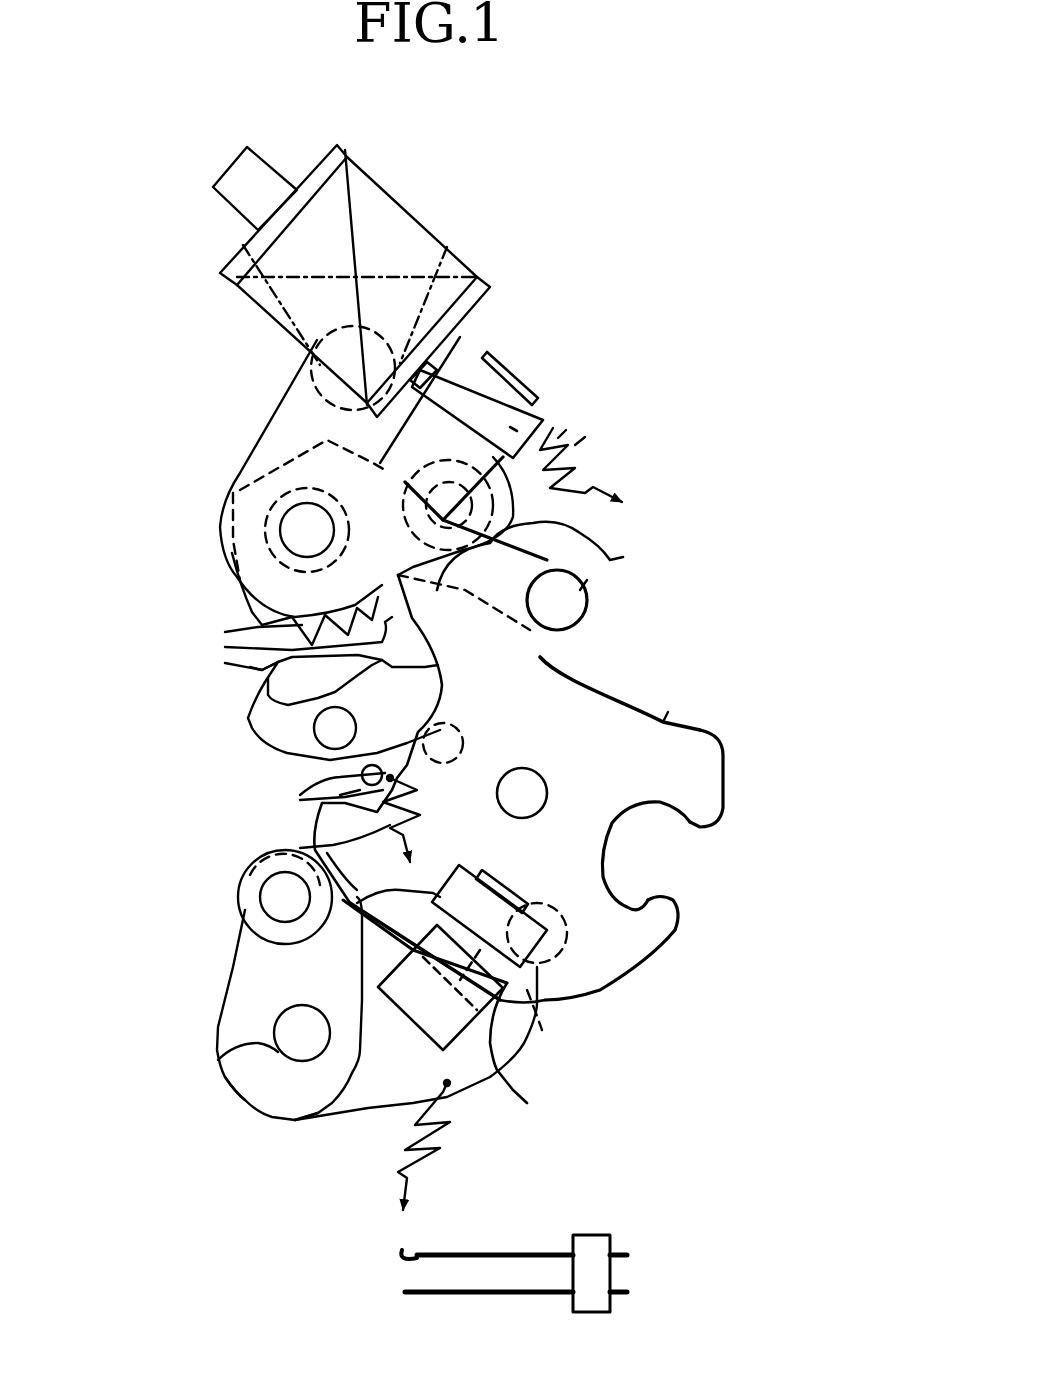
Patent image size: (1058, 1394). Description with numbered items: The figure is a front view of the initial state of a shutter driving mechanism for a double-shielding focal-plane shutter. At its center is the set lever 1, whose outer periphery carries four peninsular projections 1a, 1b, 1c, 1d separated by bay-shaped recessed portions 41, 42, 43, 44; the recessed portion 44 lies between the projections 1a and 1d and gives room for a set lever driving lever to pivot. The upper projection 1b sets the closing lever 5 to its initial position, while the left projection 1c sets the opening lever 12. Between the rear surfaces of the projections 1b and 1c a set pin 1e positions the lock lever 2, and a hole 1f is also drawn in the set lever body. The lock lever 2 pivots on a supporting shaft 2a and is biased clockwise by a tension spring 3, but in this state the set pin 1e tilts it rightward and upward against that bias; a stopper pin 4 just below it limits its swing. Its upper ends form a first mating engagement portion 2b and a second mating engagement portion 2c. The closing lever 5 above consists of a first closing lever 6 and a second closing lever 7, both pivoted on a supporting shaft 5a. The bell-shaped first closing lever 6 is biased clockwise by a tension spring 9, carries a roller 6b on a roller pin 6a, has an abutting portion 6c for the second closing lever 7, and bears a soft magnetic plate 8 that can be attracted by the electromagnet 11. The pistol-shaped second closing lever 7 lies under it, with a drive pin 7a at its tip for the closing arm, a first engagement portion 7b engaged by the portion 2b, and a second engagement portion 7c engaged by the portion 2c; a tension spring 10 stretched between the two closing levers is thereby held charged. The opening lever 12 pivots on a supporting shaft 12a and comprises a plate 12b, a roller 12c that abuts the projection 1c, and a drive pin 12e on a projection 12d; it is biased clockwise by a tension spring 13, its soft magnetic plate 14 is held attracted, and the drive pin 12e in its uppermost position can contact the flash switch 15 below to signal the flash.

The set lever 1 is at (728, 720).
The projection 1a is at (727, 763).
The projection 1b is at (550, 556).
The projection 1c is at (320, 812).
The projection 1d is at (657, 957).
The set pin 1e is at (465, 740).
The latch hole 1f is at (540, 773).
The lock lever 2 is at (227, 717).
The supporting shaft 2a is at (312, 740).
The first mating engagement portion 2b is at (250, 637).
The second mating engagement portion 2c is at (263, 670).
The tension spring 3 is at (300, 845).
The stopper pin 4 is at (360, 780).
The closing lever 5 is at (210, 530).
The supporting shaft 5a is at (285, 517).
The first closing lever 6 is at (238, 455).
The roller pin 6a is at (565, 427).
The roller 6b is at (582, 437).
The abutting portion 6c is at (287, 400).
The second closing lever 7 is at (232, 553).
The drive pin 7a is at (587, 580).
The first engagement portion 7b is at (573, 632).
The second engagement portion 7c is at (250, 667).
The soft magnetic plate 8 is at (515, 365).
The tension spring 9 is at (593, 460).
The tension spring 10 is at (228, 593).
The electromagnet 11 is at (413, 215).
The opening lever 12 is at (200, 1005).
The supporting shaft 12a is at (218, 1060).
The plate 12b is at (235, 1110).
The roller 12c is at (240, 912).
The projection 12d is at (570, 957).
The drive pin 12e is at (547, 1027).
The tension spring 13 is at (400, 1172).
The soft magnetic plate 14 is at (503, 1070).
The flash switch 15 is at (527, 1250).
The recessed portion 41 is at (663, 722).
The recessed portion 42 is at (340, 795).
The recessed portion 43 is at (308, 1120).
The recessed portion 44 is at (610, 843).